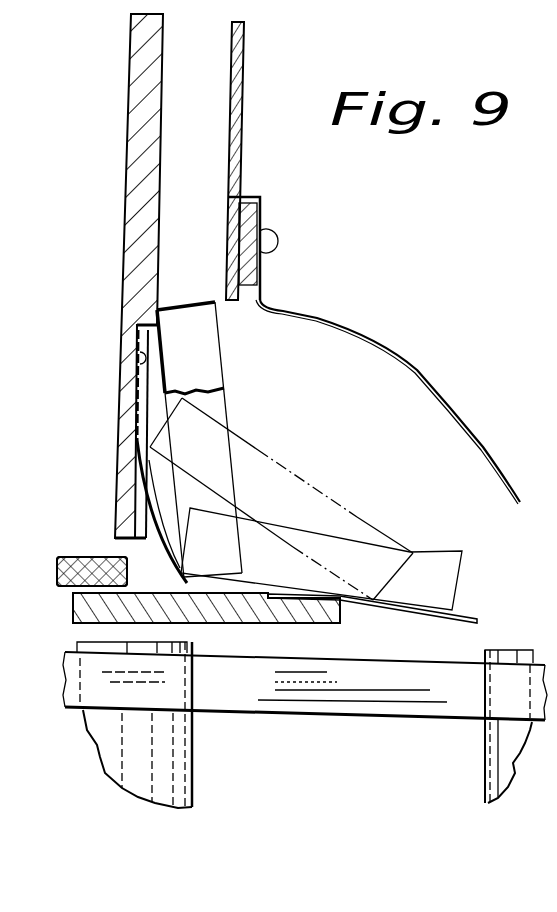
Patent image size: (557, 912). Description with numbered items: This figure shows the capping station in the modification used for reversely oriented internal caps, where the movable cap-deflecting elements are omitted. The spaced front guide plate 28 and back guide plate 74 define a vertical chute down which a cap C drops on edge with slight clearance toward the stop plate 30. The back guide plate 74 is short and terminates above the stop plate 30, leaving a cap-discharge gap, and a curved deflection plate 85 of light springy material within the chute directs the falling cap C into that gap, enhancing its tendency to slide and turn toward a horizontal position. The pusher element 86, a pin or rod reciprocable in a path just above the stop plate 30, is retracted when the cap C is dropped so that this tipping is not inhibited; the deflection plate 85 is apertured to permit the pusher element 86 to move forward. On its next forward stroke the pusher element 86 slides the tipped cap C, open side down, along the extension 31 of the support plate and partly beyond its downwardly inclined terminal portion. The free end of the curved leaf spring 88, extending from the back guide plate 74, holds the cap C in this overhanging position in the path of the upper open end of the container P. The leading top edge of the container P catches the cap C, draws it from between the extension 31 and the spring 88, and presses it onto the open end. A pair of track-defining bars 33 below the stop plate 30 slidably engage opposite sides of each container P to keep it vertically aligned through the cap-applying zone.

The front guide plate 28 is at (133, 164).
The back guide plate 74 is at (240, 77).
The curved leaf spring 88 is at (377, 342).
The pusher element 86 is at (87, 556).
The curved deflection plate 85 is at (165, 556).
The stop plate 30 is at (97, 608).
The extension of support plate 31 is at (463, 610).
The track-defining bars 33 is at (348, 667).
The cap C is at (220, 360).
The container P is at (187, 745).